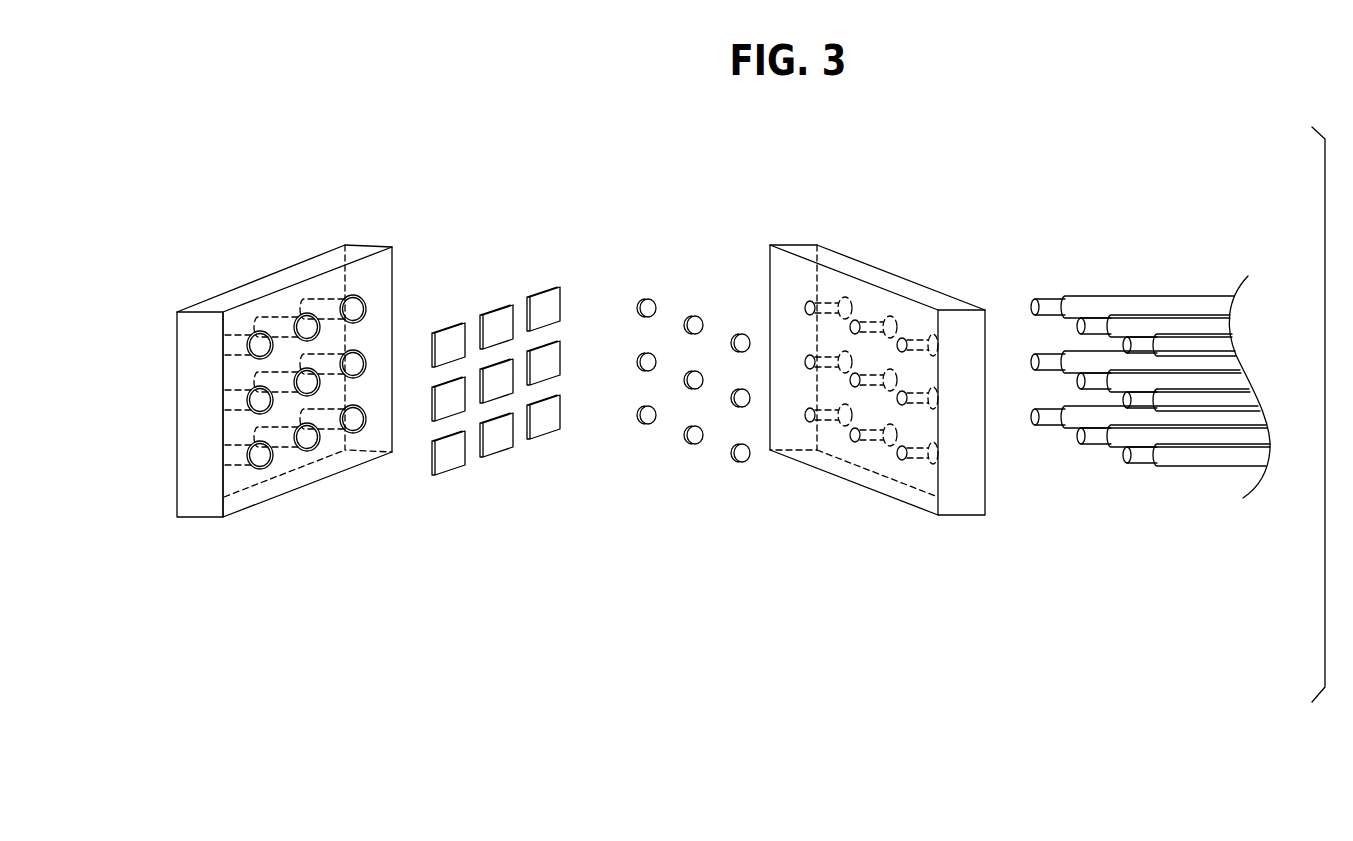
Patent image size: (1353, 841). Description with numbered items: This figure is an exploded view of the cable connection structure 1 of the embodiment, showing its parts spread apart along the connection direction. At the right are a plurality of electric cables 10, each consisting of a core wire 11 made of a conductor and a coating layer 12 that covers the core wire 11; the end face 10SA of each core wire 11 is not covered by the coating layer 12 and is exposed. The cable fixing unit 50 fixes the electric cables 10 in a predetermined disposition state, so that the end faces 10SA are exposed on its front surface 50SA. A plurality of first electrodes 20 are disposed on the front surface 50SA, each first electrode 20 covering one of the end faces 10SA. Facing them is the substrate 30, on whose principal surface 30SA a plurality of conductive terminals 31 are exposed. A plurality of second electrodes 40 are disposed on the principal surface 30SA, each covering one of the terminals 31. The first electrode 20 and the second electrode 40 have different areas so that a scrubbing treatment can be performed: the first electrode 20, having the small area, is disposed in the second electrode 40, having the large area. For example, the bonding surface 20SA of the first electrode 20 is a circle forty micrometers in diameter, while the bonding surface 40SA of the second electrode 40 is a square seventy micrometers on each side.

The cable connection structure 1 is at (942, 128).
The electric cable 10 is at (1042, 241).
The core wire 11 is at (1047, 298).
The coating layer 12 is at (1098, 296).
The end face 10SA is at (1120, 456).
The first electrode 20 is at (695, 312).
The bonding surface 20SA is at (732, 455).
The substrate 30 is at (313, 256).
The terminal 31 is at (364, 297).
The principal surface 30SA is at (316, 479).
The second electrode 40 is at (548, 286).
The bonding surface 40SA is at (454, 456).
The cable fixing unit 50 is at (838, 253).
The front surface 50SA is at (854, 477).